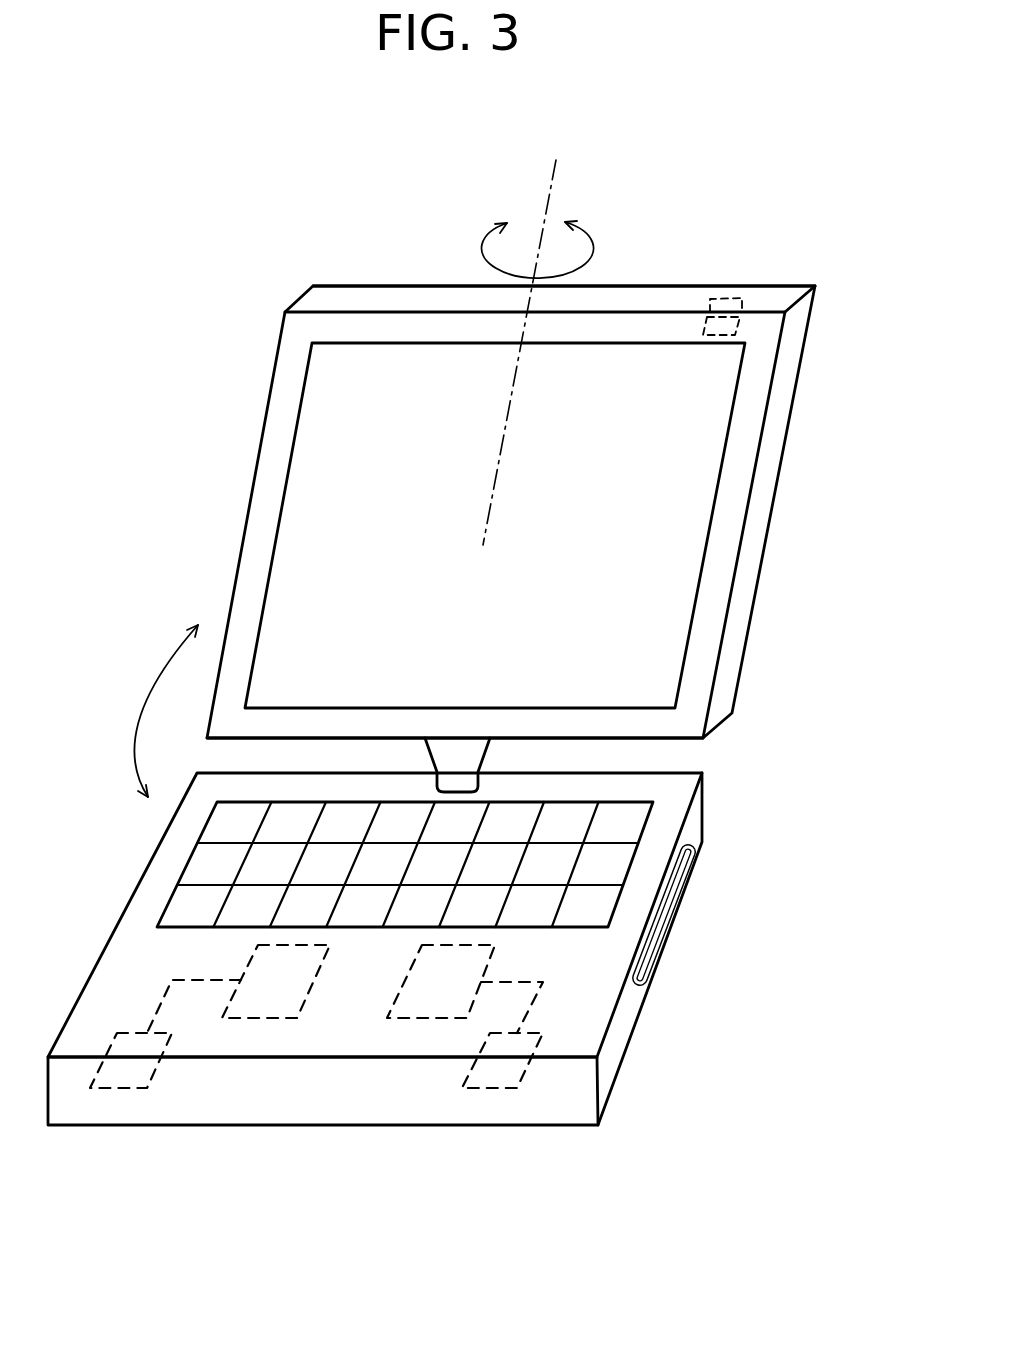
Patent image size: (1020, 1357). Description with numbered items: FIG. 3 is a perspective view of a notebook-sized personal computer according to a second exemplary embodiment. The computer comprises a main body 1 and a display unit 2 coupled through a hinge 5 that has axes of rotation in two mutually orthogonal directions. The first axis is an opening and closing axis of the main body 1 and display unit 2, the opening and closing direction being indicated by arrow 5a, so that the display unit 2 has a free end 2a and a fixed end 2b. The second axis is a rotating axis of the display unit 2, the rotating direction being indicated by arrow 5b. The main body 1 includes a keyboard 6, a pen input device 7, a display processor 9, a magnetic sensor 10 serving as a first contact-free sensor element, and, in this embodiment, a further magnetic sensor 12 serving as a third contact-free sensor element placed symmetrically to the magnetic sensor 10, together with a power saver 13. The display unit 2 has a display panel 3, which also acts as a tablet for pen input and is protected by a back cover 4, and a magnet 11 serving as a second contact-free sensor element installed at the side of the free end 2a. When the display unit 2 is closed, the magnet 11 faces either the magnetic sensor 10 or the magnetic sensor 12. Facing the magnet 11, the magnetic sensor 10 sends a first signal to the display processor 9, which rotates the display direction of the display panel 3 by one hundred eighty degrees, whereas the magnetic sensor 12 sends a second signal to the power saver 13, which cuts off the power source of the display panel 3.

The main body 1 is at (292, 1125).
The display unit 2 is at (752, 548).
The free end 2a is at (522, 332).
The fixed end 2b is at (463, 722).
The display panel 3 is at (338, 417).
The back cover 4 is at (800, 370).
The hinge 5 is at (457, 755).
The arrow indicating opening and closing direction 5a is at (147, 711).
The arrow indicating rotating direction 5b is at (550, 352).
The keyboard 6 is at (218, 860).
The pen input device 7 is at (662, 912).
The display processor 9 is at (247, 962).
The magnetic sensor 10 is at (107, 1125).
The magnet 11 is at (728, 297).
The magnetic sensor 12 is at (510, 1125).
The power saver 13 is at (422, 1018).